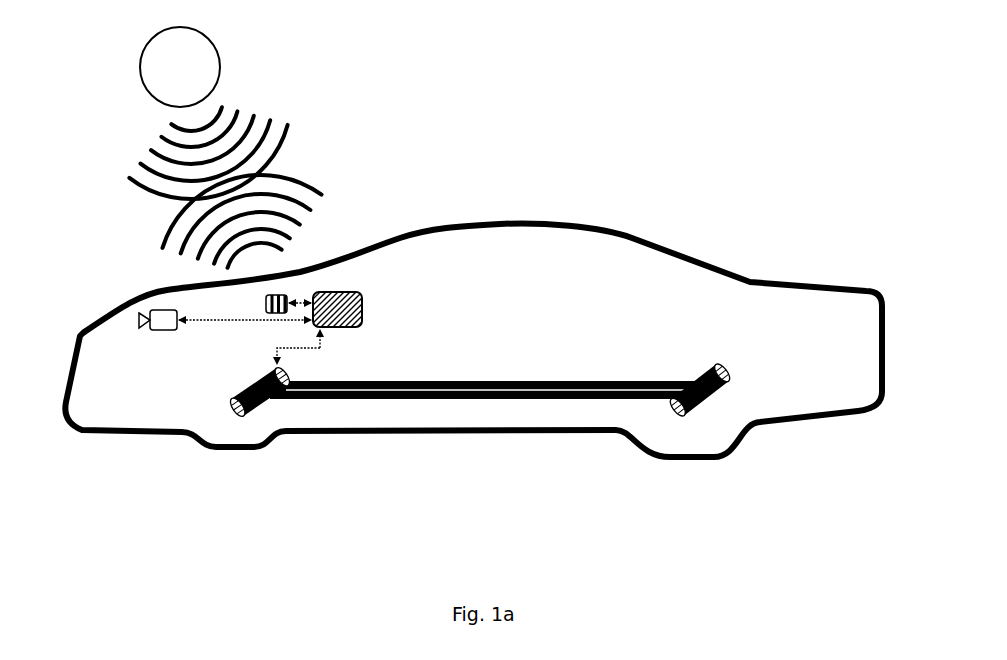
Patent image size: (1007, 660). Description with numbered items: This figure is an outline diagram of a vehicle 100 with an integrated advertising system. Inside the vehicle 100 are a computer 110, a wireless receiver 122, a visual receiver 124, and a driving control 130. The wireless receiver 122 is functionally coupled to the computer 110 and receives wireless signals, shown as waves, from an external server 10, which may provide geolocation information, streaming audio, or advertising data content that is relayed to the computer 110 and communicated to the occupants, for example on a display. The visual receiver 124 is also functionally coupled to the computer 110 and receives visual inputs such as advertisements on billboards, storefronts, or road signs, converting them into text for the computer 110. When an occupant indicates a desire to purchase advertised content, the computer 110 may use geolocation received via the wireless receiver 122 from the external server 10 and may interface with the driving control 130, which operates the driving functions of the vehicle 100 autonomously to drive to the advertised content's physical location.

The external server 10 is at (225, 147).
The vehicle 100 is at (761, 146).
The computer 110 is at (343, 292).
The wireless receiver 122 is at (263, 308).
The visual receiver 124 is at (167, 307).
The driving control 130 is at (232, 410).